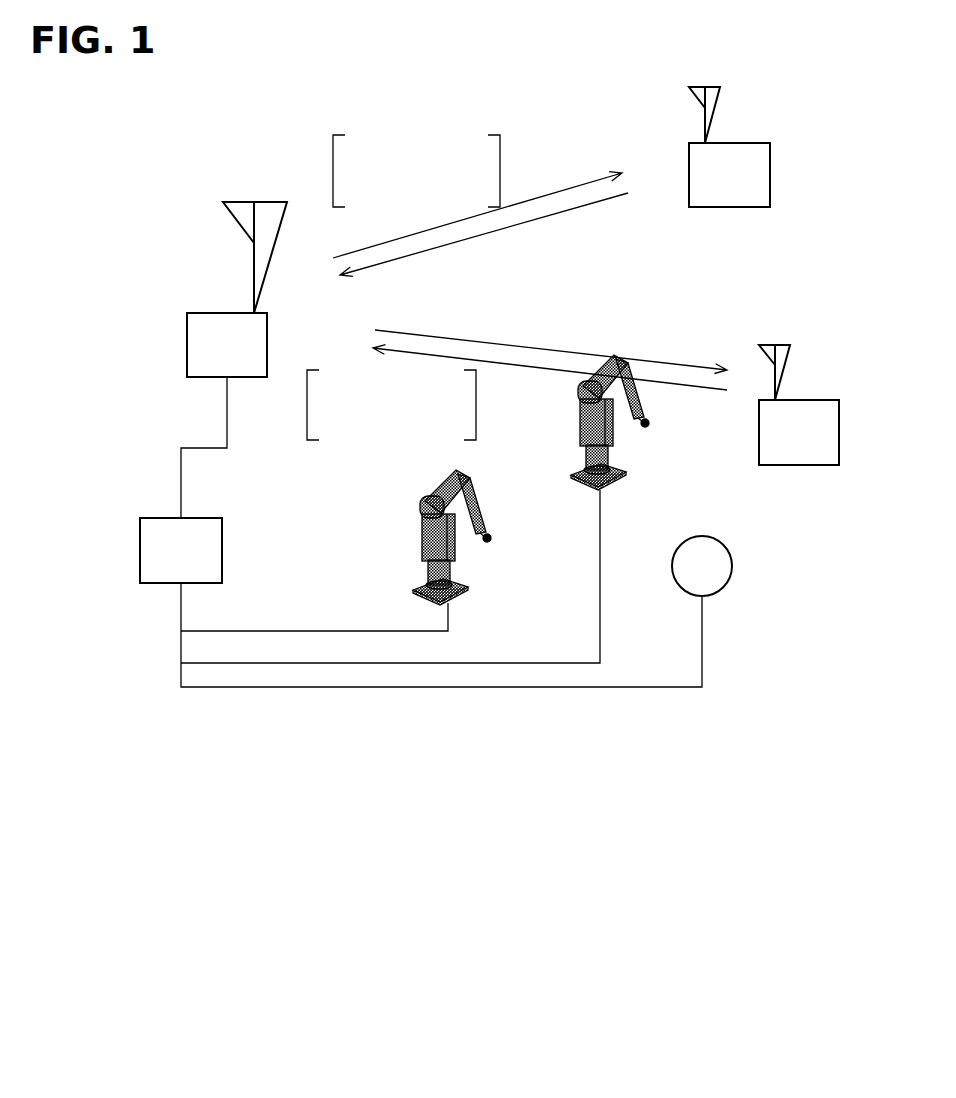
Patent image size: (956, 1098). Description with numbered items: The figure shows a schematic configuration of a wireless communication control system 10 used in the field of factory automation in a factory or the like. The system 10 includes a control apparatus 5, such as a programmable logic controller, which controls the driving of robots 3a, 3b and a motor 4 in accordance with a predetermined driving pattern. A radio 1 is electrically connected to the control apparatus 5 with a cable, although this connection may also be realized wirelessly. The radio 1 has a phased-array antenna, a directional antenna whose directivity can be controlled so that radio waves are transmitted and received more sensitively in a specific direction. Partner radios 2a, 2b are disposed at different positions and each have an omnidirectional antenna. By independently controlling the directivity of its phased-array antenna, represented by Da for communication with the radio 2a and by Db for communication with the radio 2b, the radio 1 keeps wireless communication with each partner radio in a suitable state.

The radio 1 is at (187, 347).
The radio 2a is at (752, 207).
The radio 2b is at (822, 465).
The robot 3a is at (420, 512).
The robot 3b is at (580, 434).
The motor 4 is at (722, 588).
The control apparatus 5 is at (140, 548).
The wireless communication control system 10 is at (800, 830).